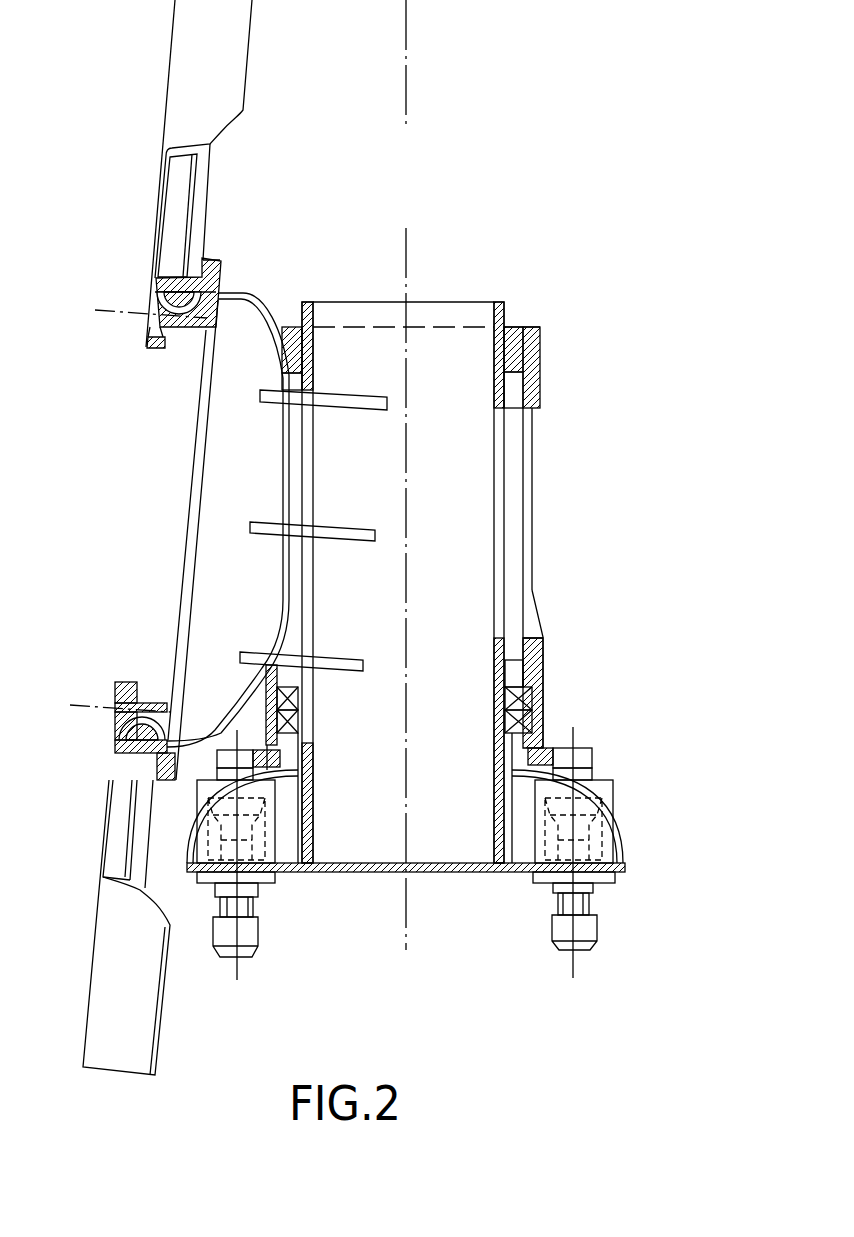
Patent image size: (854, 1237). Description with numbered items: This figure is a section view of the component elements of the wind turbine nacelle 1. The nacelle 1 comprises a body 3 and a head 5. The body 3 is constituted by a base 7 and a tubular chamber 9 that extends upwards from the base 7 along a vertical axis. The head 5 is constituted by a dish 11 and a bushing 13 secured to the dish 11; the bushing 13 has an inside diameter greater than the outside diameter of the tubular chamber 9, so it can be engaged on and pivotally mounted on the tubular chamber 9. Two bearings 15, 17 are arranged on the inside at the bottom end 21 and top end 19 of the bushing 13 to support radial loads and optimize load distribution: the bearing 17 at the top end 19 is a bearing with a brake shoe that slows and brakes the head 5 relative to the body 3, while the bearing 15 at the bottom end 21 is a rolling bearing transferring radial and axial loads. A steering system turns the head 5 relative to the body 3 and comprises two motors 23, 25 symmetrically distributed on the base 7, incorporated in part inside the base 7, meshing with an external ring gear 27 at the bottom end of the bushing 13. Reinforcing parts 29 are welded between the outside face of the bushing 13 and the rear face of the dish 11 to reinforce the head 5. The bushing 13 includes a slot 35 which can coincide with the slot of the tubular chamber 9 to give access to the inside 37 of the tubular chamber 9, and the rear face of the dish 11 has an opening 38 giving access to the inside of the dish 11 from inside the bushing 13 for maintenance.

The wind turbine nacelle 1 is at (579, 332).
The body 3 is at (626, 842).
The head 5 is at (547, 367).
The base 7 is at (622, 818).
The tubular chamber 9 is at (508, 528).
The dish 11 is at (241, 293).
The bushing 13 is at (541, 394).
The bearing 15 is at (513, 681).
The bearing 17 is at (513, 375).
The top end 19 is at (525, 340).
The bottom end 21 is at (535, 707).
The motor 23 is at (252, 933).
The motor 25 is at (558, 930).
The external ring gear 27 is at (289, 763).
The reinforcing parts 29 is at (347, 411).
The slot 35 is at (530, 596).
The inside of the tubular chamber 37 is at (462, 586).
The opening 38 is at (288, 548).